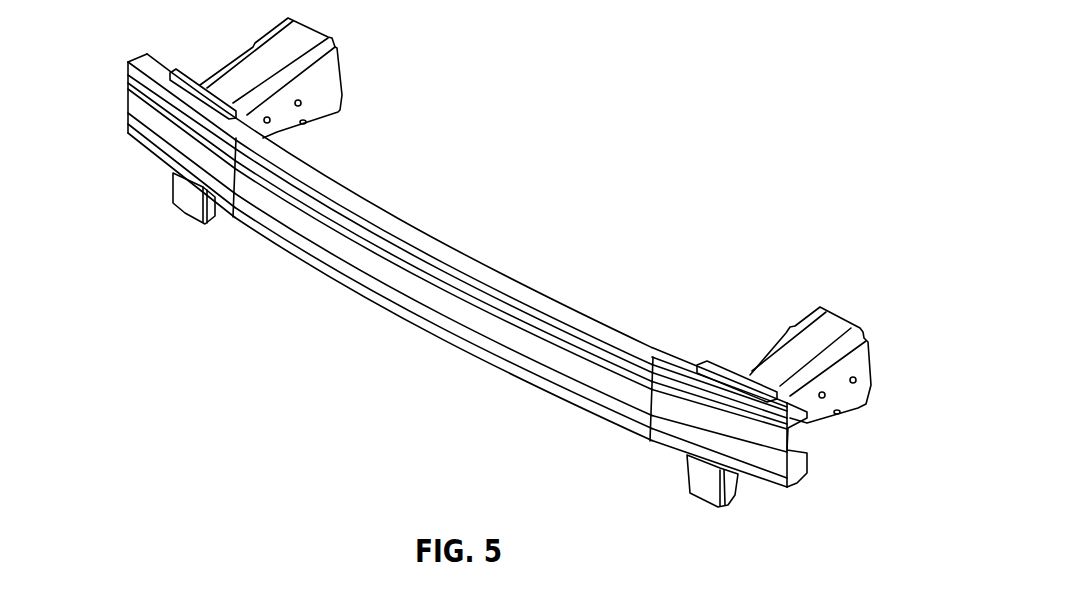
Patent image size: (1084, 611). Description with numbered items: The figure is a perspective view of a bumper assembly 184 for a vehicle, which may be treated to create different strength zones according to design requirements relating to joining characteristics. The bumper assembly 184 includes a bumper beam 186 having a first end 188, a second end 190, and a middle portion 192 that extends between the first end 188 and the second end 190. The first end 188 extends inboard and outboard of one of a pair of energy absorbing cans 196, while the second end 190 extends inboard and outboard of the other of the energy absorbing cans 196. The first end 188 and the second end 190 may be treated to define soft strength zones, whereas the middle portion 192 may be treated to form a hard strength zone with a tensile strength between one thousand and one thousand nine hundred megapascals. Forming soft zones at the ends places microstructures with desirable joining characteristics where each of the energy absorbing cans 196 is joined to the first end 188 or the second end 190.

The bumper assembly 184 is at (502, 292).
The bumper beam 186 is at (783, 496).
The first end 188 is at (767, 452).
The second end 190 is at (133, 121).
The middle portion 192 is at (510, 333).
The energy absorbing cans 196 is at (269, 57).